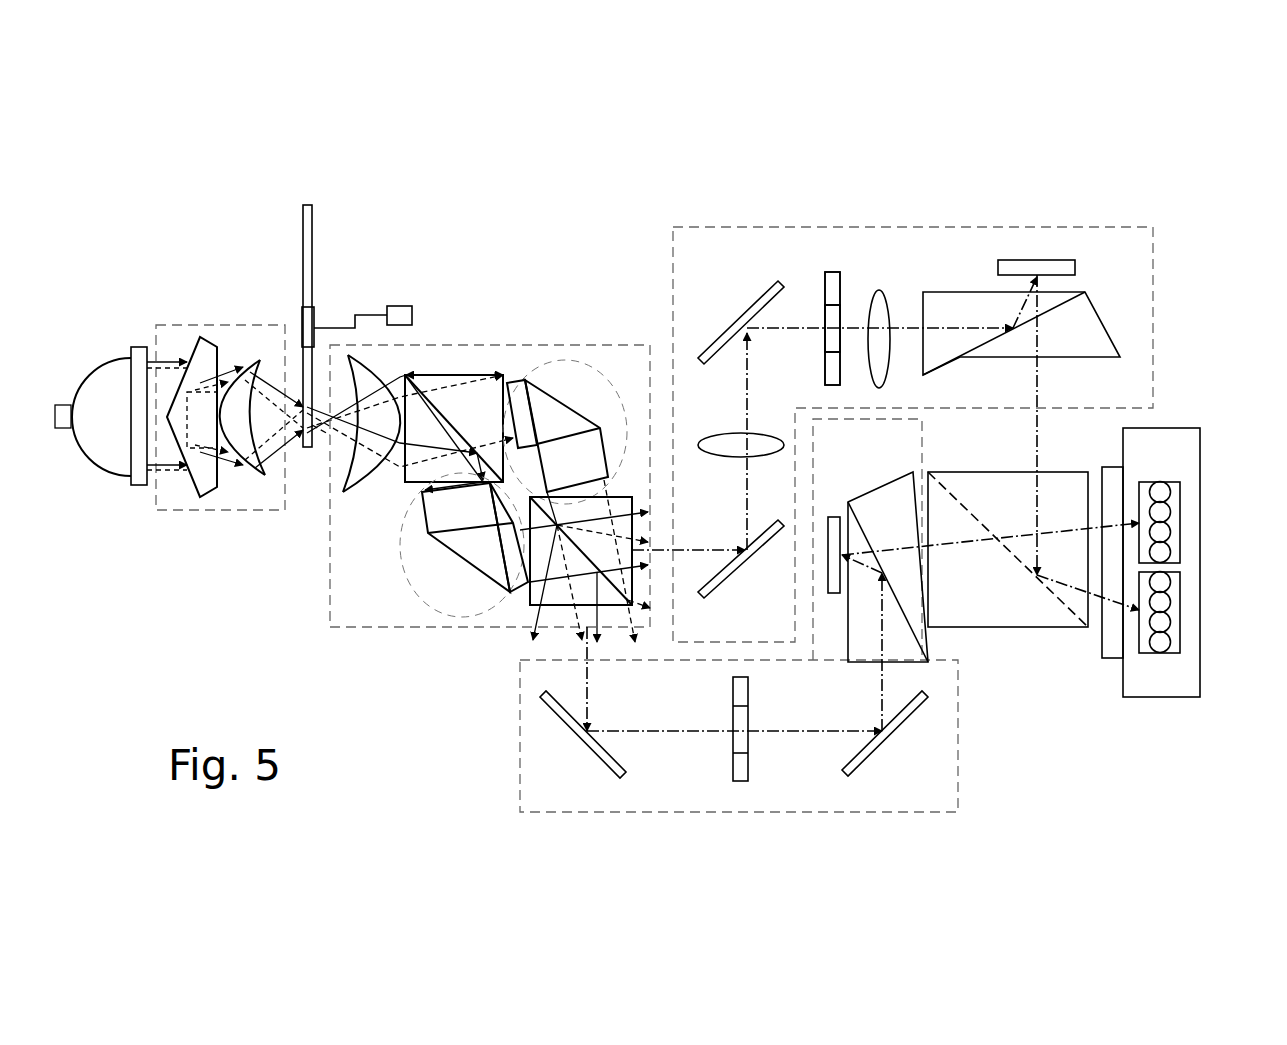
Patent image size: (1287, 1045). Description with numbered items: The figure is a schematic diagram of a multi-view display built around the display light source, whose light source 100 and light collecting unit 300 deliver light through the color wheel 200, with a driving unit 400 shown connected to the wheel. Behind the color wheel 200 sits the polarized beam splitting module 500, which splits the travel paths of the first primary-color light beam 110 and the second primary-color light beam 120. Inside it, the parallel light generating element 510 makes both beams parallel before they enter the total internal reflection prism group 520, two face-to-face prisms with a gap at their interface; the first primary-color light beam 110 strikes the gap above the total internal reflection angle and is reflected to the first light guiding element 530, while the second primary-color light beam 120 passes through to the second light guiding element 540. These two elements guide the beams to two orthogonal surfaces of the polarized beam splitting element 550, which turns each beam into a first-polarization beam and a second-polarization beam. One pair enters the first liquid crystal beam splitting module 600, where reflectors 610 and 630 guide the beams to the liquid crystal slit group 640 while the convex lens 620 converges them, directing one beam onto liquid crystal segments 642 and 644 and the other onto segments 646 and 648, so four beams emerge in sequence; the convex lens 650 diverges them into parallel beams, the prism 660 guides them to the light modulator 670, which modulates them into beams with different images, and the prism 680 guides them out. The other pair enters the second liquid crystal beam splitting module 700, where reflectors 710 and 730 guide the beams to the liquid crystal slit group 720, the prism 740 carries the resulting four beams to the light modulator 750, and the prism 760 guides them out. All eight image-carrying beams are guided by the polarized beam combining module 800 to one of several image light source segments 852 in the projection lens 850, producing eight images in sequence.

The light source 100 is at (90, 468).
The first primary-color light beam 110 is at (343, 388).
The second primary-color light beam 120 is at (322, 447).
The color wheel 200 is at (307, 205).
The light collecting unit 300 is at (203, 325).
The driving unit 400 is at (398, 306).
The polarized beam splitting module 500 is at (510, 345).
The parallel light generating element 510 is at (363, 492).
The total internal reflection prism group 520 is at (453, 375).
The first light guiding element 530 is at (417, 552).
The second light guiding element 540 is at (578, 378).
The polarized beam splitting element 550 is at (533, 632).
The first liquid crystal beam splitting module 600 is at (1153, 297).
The reflector 610 is at (727, 582).
The convex lens 620 is at (722, 457).
The reflector 630 is at (742, 322).
The liquid crystal slit group 640 is at (860, 125).
The liquid crystal segment 642 is at (825, 290).
The liquid crystal segment 644 is at (825, 308).
The liquid crystal segment 646 is at (840, 330).
The liquid crystal segment 648 is at (843, 372).
The convex lens 650 is at (879, 290).
The prism 660 is at (963, 292).
The light modulator 670 is at (1038, 260).
The prism 680 is at (1120, 322).
The second liquid crystal beam splitting module 700 is at (519, 800).
The reflector 710 is at (557, 722).
The liquid crystal slit group 720 is at (750, 766).
The reflector 730 is at (905, 735).
The prism 740 is at (898, 663).
The light modulator 750 is at (834, 593).
The prism 760 is at (888, 485).
The polarized beam combining module 800 is at (1062, 627).
The projection lens 850 is at (1160, 697).
The image light source segment 852 is at (1170, 492).